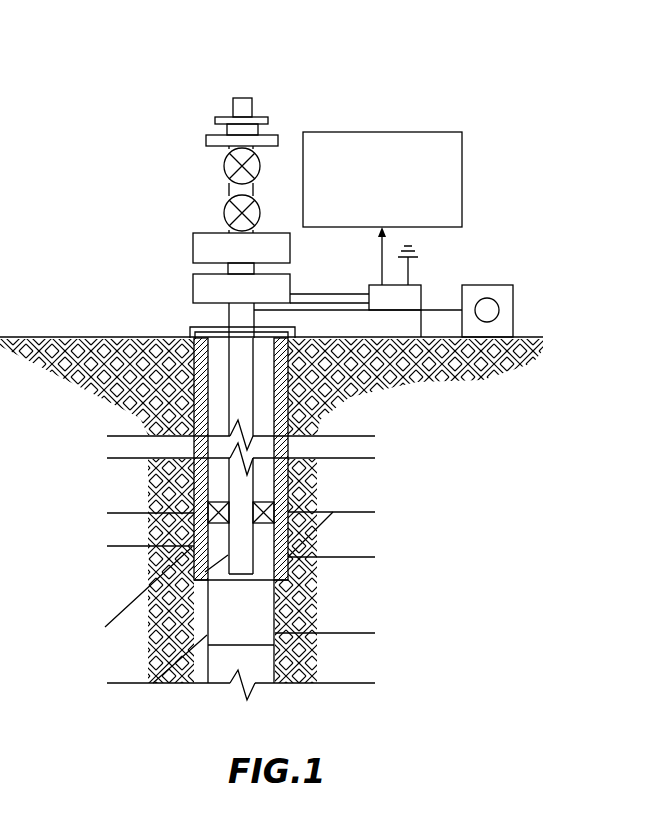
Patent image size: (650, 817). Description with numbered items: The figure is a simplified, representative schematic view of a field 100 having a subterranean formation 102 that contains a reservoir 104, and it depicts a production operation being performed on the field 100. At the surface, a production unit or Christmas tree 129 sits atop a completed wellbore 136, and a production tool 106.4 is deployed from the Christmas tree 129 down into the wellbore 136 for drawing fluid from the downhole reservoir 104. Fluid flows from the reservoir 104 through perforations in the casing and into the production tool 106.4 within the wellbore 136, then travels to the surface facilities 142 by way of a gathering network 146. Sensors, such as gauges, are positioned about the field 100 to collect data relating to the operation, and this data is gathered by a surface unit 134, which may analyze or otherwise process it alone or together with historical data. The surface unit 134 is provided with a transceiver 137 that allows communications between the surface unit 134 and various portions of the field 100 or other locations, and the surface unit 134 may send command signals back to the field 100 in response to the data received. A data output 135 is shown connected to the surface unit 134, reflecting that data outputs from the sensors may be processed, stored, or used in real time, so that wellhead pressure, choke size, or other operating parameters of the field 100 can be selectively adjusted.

The field 100 is at (112, 192).
The production unit or Christmas tree 129 is at (243, 96).
The data output 135 is at (425, 132).
The surface unit 134 is at (372, 285).
The transceiver 137 is at (410, 272).
The surface facilities 142 is at (513, 300).
The gathering network 146 is at (442, 326).
The wellbore 136 is at (268, 376).
The subterranean formation 102 is at (353, 491).
The reservoir 104 is at (377, 607).
The production tool 106.4 is at (192, 581).